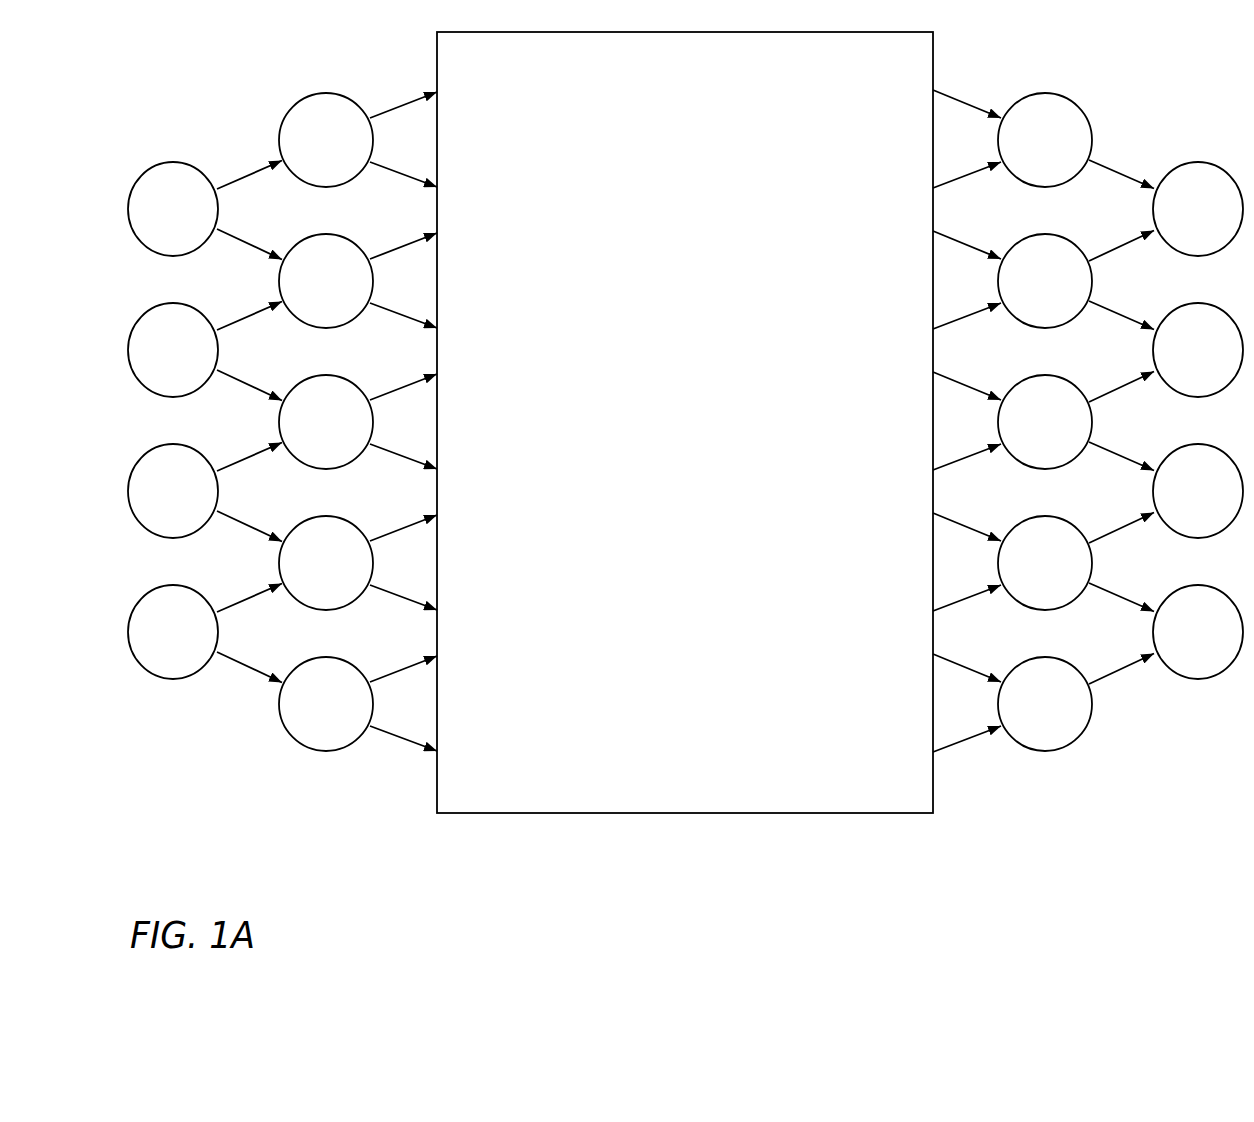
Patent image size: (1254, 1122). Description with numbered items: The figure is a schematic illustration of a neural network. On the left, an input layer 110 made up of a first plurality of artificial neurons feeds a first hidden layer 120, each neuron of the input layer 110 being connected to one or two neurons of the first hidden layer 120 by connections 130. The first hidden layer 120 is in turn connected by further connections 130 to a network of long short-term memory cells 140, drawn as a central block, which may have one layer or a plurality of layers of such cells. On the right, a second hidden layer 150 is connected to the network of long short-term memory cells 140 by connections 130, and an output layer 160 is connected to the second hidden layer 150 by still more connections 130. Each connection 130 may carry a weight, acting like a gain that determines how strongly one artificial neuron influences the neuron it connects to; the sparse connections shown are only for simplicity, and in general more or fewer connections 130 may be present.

The input layer 110 is at (137, 775).
The first hidden layer 120 is at (292, 775).
The connections 130 is at (217, 775).
The network of long short-term memory cells 140 is at (862, 813).
The second hidden layer 150 is at (1017, 775).
The output layer 160 is at (1168, 775).